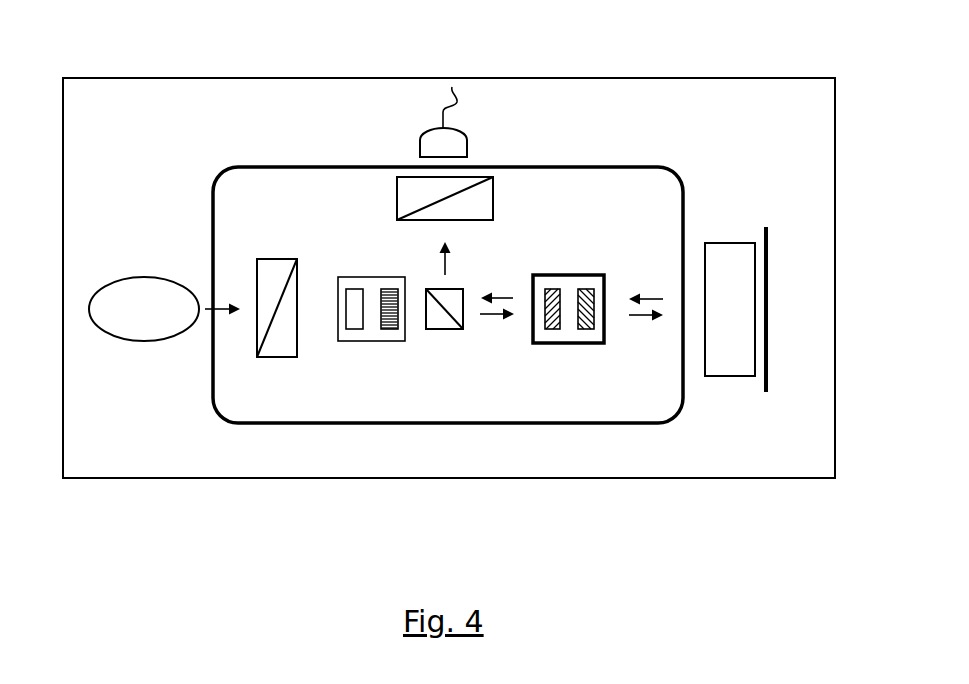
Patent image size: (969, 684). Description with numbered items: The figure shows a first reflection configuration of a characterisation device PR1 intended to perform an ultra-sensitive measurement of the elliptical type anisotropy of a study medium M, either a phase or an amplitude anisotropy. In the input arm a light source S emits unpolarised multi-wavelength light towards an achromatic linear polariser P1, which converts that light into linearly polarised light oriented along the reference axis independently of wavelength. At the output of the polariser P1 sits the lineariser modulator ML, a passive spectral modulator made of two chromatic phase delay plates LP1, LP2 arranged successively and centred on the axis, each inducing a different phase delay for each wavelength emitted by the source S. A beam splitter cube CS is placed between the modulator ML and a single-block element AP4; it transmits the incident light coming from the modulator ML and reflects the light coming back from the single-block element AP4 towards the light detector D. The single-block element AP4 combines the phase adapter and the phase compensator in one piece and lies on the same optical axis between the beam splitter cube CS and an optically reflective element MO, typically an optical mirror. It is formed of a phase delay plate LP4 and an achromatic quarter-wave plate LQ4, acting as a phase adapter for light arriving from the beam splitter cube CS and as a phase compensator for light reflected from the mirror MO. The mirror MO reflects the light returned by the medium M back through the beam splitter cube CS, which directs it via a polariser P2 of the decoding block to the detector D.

The characterisation device PR1 is at (133, 125).
The light source S is at (147, 341).
The achromatic linear polariser P1 is at (270, 259).
The lineariser modulator ML is at (363, 277).
The phase delay plate LP1 is at (356, 330).
The phase delay plate LP2 is at (390, 330).
The beam splitter cube CS is at (446, 330).
The single-block element AP4 is at (558, 275).
The phase delay plate LP4 is at (553, 343).
The achromatic quarter-wave plate LQ4 is at (589, 343).
The polariser P2 is at (402, 177).
The light detector D is at (467, 140).
The study medium M is at (737, 243).
The optically reflective element MO is at (767, 375).